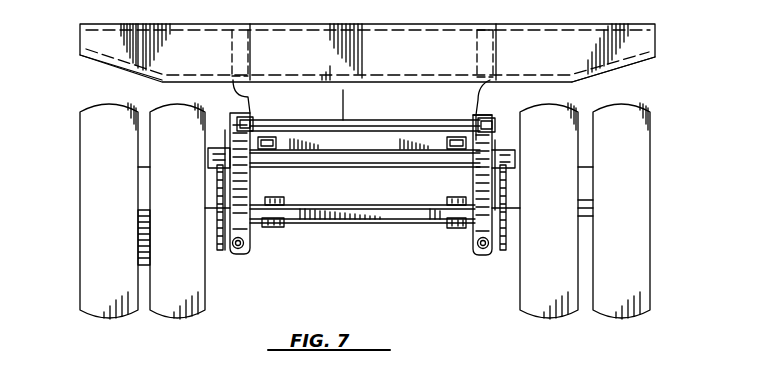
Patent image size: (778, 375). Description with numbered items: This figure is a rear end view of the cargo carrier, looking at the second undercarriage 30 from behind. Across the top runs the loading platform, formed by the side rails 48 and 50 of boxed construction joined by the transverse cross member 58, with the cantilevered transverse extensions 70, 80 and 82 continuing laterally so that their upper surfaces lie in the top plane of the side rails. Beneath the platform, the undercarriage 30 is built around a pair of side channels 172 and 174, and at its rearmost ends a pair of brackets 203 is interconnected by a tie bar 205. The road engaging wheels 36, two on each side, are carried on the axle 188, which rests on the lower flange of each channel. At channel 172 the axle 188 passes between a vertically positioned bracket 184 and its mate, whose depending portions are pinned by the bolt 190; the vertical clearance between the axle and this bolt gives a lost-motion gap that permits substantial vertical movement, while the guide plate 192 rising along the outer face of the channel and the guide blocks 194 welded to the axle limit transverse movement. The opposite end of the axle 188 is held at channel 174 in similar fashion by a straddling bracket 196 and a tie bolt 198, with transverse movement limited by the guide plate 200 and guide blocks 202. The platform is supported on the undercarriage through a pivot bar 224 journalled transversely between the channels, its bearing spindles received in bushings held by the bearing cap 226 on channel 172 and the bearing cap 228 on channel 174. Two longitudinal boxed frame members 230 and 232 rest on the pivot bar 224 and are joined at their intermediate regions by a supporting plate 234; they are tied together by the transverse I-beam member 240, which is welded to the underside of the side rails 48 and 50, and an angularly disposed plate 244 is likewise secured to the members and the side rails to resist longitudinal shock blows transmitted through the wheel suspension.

The second undercarriage 30 is at (490, 108).
The road engaging wheels 36 is at (93, 282).
The side rail 48 is at (505, 52).
The side rail 50 is at (228, 47).
The transverse cross member 58 is at (373, 35).
The transverse extension 70 is at (638, 42).
The transverse extension 80 is at (741, 358).
The transverse extension 82 is at (95, 40).
The side channel 172 is at (483, 172).
The side channel 174 is at (245, 172).
The vertically positioned bracket 184 is at (473, 232).
The axle 188 is at (331, 210).
The bolt 190 is at (483, 248).
The guide plate 192 is at (503, 251).
The guide blocks 194 is at (457, 233).
The bracket 196 is at (248, 228).
The tie bolt 198 is at (240, 245).
The guide plate 200 is at (222, 251).
The guide blocks 202 is at (284, 203).
The brackets 203 is at (252, 120).
The tie bar 205 is at (400, 123).
The pivot bar 224 is at (355, 162).
The bearing cap 226 is at (510, 150).
The bearing cap 228 is at (213, 148).
The boxed frame member 230 is at (440, 146).
The boxed frame member 232 is at (282, 146).
The supporting plate 234 is at (328, 150).
The I-beam member 240 is at (343, 90).
The plate 244 is at (253, 67).